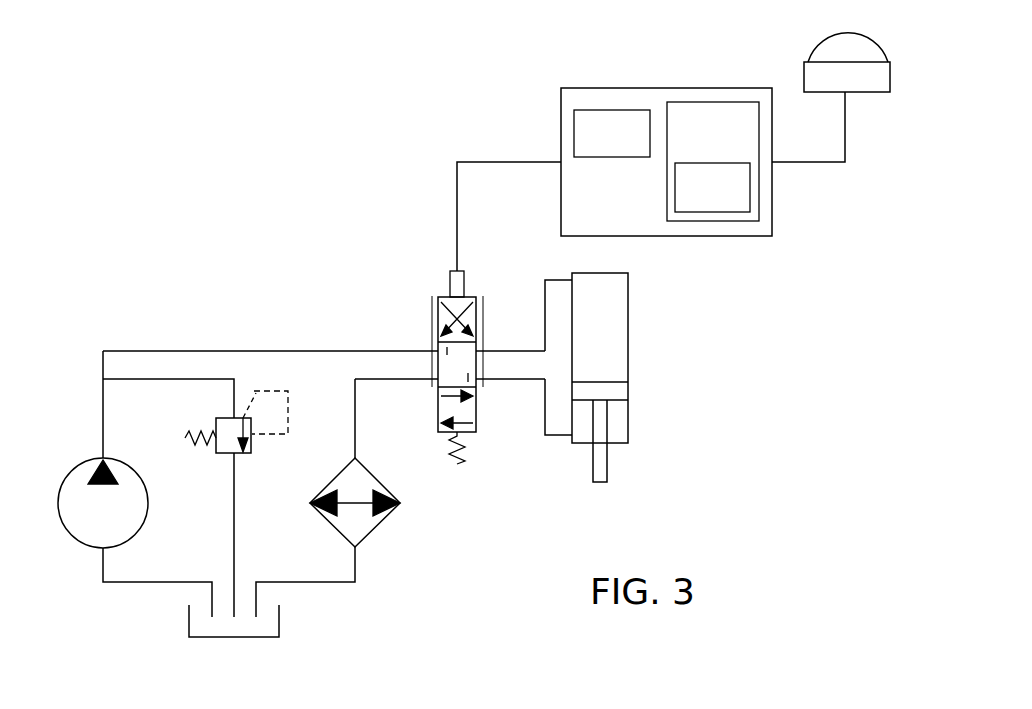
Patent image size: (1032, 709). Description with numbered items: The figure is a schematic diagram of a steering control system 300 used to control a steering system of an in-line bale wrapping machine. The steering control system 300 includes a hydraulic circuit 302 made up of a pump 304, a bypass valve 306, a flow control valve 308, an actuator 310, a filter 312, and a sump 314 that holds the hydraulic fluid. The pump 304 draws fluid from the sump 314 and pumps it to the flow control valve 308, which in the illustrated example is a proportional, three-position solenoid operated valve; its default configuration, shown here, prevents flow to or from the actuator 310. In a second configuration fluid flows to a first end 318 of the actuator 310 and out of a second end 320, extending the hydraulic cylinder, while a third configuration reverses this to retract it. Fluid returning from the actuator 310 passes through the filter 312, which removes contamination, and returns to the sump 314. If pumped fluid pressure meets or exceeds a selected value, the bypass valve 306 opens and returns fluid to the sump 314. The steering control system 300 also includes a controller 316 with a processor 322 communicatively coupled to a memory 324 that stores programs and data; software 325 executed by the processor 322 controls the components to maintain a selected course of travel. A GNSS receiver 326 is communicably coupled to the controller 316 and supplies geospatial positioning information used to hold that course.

The steering control system 300 is at (211, 162).
The hydraulic circuit 302 is at (255, 350).
The pump 304 is at (85, 548).
The bypass valve 306 is at (223, 453).
The flow control valve 308 is at (447, 297).
The actuator 310 is at (648, 366).
The filter 312 is at (370, 533).
The sump 314 is at (279, 628).
The controller 316 is at (666, 162).
The first end 318 is at (605, 273).
The second end 320 is at (628, 432).
The processor 322 is at (636, 145).
The memory 324 is at (734, 145).
The software 325 is at (736, 200).
The GNSS receiver 326 is at (817, 48).